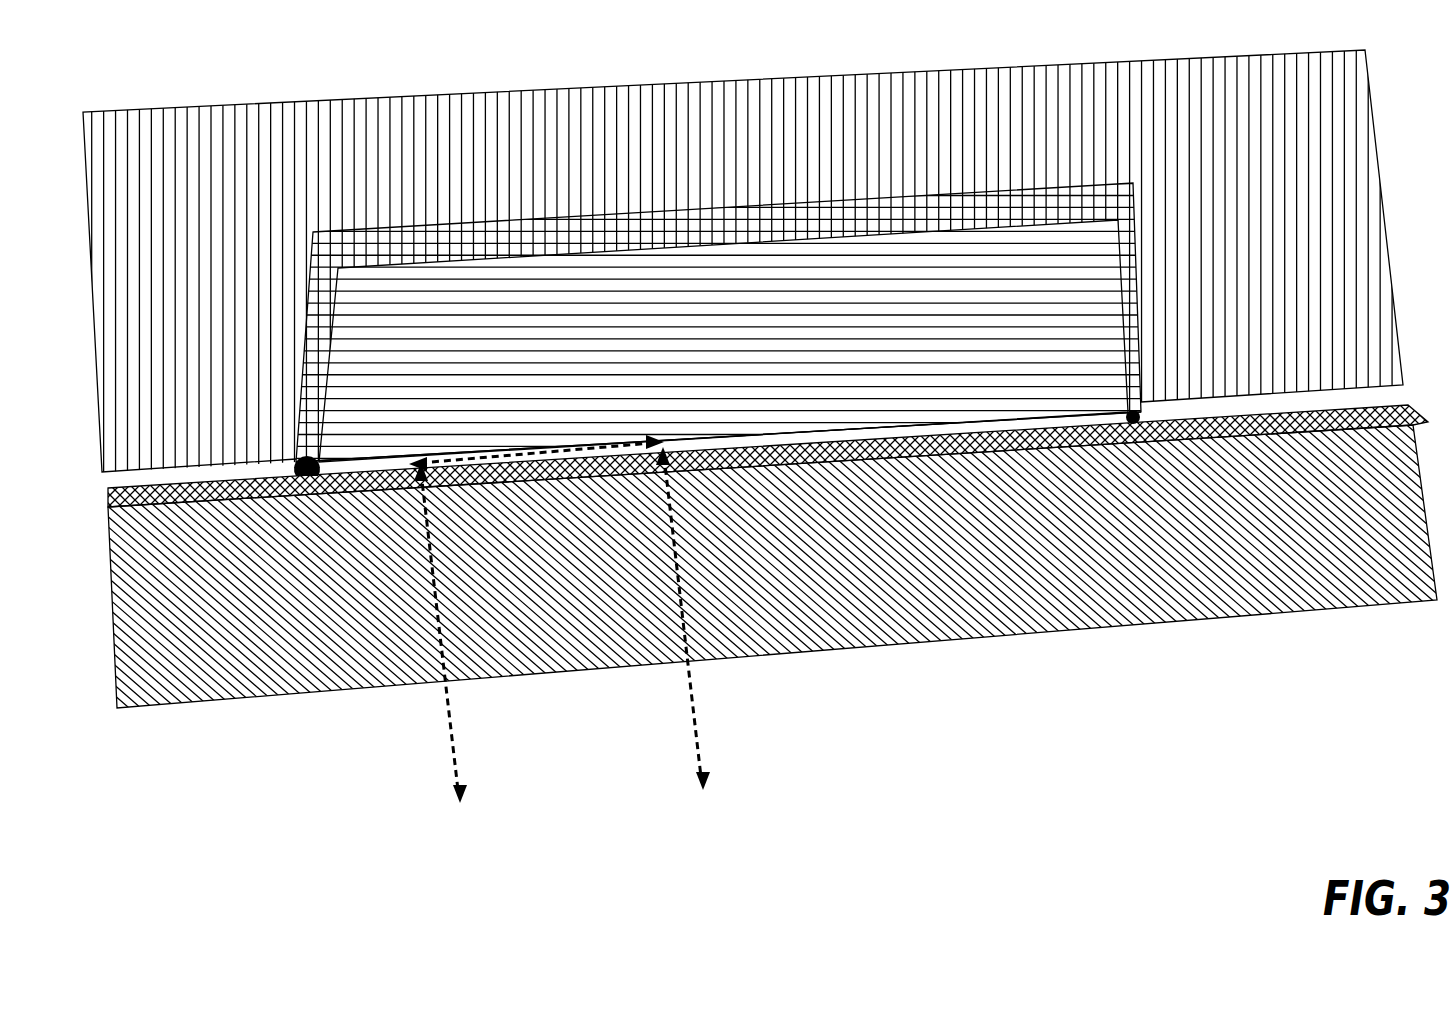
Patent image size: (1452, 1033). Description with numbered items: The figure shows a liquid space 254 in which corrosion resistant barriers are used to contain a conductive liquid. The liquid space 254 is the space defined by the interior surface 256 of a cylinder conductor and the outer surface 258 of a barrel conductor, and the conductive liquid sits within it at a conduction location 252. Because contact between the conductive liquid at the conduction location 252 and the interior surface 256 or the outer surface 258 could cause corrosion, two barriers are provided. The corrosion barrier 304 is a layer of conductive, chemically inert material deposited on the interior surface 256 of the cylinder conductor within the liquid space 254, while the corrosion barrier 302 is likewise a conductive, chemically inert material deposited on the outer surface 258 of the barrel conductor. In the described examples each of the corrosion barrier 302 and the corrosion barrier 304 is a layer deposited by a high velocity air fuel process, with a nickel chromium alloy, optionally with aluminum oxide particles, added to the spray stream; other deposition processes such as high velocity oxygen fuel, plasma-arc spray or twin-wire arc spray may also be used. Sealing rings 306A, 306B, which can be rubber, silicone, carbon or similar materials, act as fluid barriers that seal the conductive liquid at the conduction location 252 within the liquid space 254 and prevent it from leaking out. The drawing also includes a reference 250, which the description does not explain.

The coordinate reference / mounting surface 250 is at (506, 480).
The conduction location 252 is at (796, 367).
The liquid space 254 is at (934, 358).
The interior surface 256 is at (1018, 192).
The outer surface 258 is at (1090, 443).
The corrosion barrier 302 is at (538, 238).
The corrosion barrier 304 is at (1310, 417).
The sealing ring 306A is at (320, 483).
The sealing ring 306B is at (1143, 425).